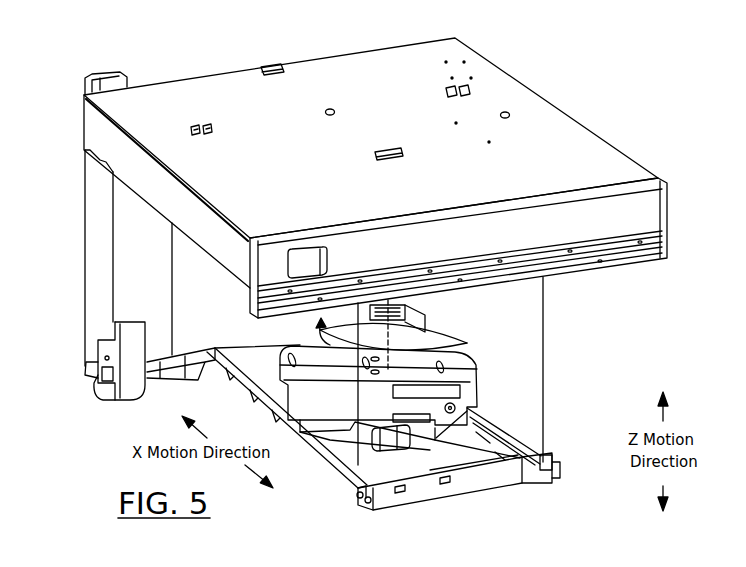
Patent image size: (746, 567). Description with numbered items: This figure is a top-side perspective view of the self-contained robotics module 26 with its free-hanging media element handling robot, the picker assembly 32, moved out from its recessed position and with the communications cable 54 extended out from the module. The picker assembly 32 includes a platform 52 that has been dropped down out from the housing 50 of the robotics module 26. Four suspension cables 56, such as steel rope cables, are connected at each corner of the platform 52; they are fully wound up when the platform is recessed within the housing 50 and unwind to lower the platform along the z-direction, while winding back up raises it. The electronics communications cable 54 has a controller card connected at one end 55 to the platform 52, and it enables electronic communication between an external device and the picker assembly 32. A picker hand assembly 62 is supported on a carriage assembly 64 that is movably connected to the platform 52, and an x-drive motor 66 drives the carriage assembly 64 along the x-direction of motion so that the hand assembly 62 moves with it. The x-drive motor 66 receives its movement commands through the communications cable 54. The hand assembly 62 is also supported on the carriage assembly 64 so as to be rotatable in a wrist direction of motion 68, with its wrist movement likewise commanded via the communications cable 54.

The self-contained robotics module 26 is at (590, 86).
The picker assembly 32 is at (565, 410).
The housing 50 is at (482, 80).
The platform 52 is at (450, 487).
The electronics communications cable 54 is at (308, 258).
The end of communications cable 55 is at (130, 322).
The suspension cables 56 is at (182, 285).
The picker hand assembly 62 is at (326, 402).
The carriage assembly 64 is at (397, 462).
The x-drive motor 66 is at (497, 462).
The wrist direction of motion 68 is at (458, 337).